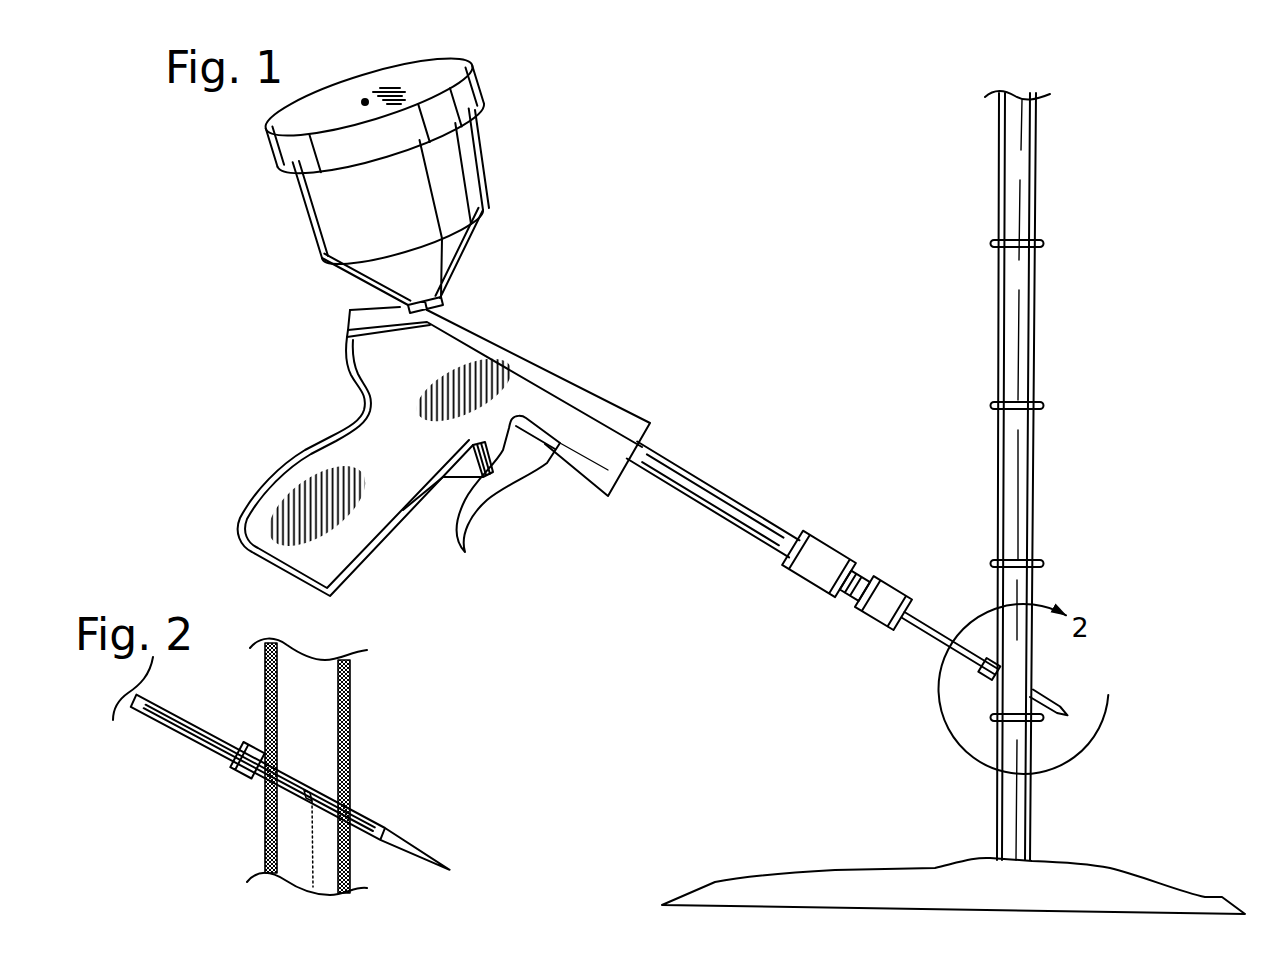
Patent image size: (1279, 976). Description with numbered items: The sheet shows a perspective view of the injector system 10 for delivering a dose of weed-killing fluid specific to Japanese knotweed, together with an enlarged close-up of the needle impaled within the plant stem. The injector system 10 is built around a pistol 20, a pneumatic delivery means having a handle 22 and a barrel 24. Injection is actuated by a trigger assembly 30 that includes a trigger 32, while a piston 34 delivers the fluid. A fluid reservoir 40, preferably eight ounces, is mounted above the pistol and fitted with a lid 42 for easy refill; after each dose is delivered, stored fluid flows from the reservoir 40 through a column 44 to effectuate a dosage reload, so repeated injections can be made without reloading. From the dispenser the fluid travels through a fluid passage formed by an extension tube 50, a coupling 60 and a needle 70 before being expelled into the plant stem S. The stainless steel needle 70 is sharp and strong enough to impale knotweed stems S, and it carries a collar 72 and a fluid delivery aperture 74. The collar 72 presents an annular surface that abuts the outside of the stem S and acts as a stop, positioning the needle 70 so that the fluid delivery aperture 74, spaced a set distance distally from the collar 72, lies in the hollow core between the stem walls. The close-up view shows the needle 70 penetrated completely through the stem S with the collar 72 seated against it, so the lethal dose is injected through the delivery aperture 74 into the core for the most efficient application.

In FIG. 1, the injector system 10 is at (824, 174).
In FIG. 1, the pistol 20 is at (438, 463).
In FIG. 1, the handle 22 is at (350, 541).
In FIG. 1, the barrel 24 is at (597, 395).
In FIG. 1, the trigger assembly 30 is at (492, 484).
In FIG. 1, the trigger 32 is at (507, 464).
In FIG. 1, the piston 34 is at (460, 480).
In FIG. 1, the fluid reservoir 40 is at (470, 170).
In FIG. 1, the lid 42 is at (403, 82).
In FIG. 1, the column 44 is at (447, 296).
In FIG. 1, the extension tube 50 is at (716, 516).
In FIG. 1, the coupling 60 is at (818, 630).
In FIG. 1, the needle 70 is at (927, 627).
In FIG. 2, the needle 70 is at (370, 818).
In FIG. 1, the collar 72 is at (986, 678).
In FIG. 2, the collar 72 is at (240, 768).
In FIG. 2, the fluid delivery aperture 74 is at (307, 797).
In FIG. 1, the stem S is at (1018, 208).
In FIG. 2, the stem S is at (352, 698).